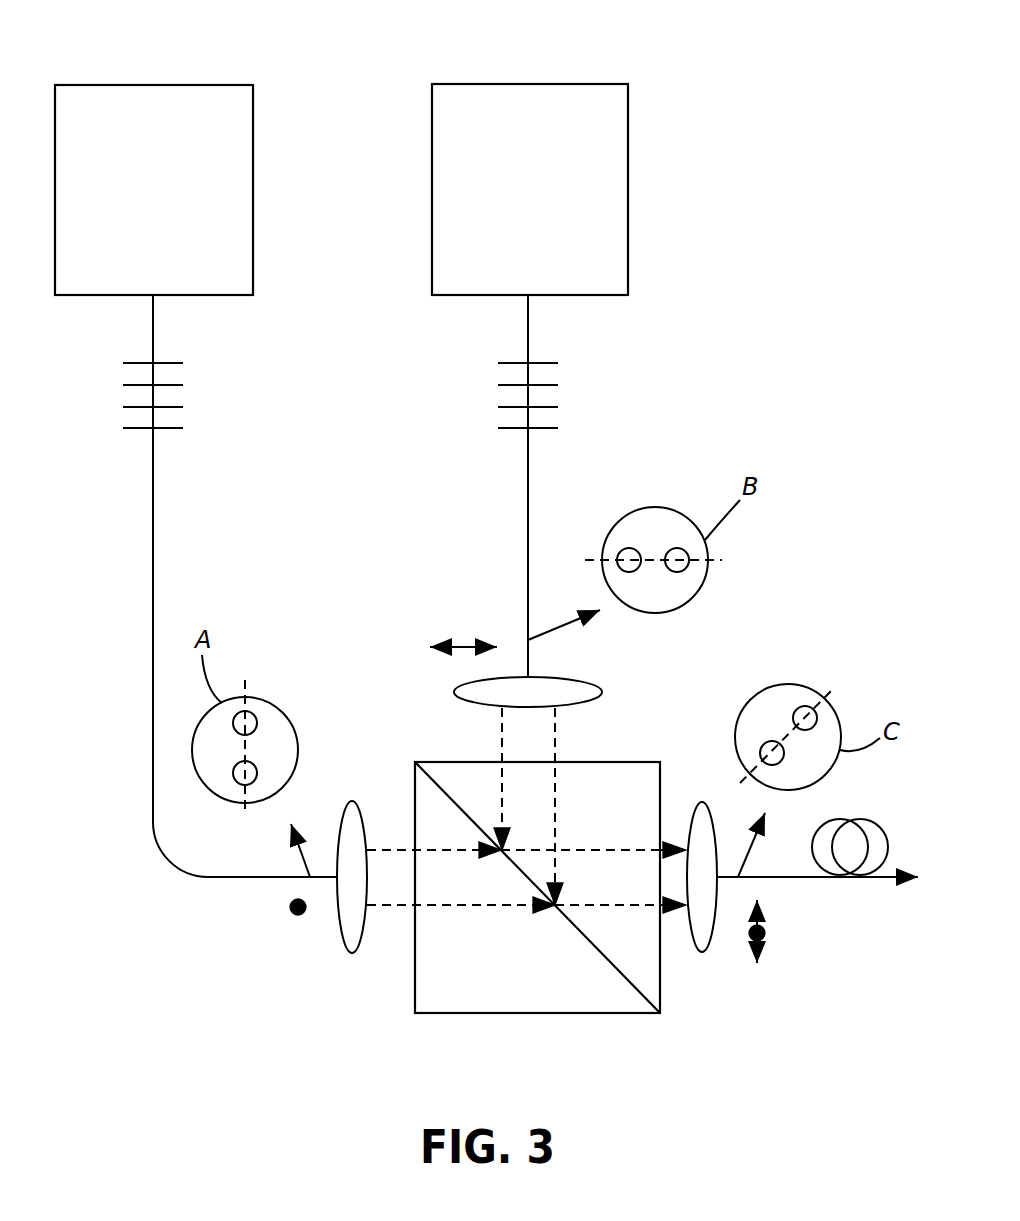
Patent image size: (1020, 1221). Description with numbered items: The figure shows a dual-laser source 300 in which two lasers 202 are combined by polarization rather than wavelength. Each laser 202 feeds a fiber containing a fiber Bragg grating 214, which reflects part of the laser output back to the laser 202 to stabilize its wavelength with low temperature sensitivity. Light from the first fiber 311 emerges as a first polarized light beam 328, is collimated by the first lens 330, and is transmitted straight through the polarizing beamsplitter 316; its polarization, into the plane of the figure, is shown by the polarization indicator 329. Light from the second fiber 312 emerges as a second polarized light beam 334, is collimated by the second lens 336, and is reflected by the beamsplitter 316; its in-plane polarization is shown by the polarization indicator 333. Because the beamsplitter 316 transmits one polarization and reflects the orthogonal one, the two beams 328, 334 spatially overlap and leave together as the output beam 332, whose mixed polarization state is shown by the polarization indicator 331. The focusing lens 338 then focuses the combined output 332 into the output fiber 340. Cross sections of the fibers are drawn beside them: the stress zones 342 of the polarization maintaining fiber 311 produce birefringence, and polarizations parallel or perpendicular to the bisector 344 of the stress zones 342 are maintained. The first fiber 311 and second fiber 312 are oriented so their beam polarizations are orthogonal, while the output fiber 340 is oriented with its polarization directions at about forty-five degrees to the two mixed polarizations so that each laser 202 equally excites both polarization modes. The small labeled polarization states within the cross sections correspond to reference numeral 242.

The laser 202 is at (167, 85).
The fiber Bragg grating 214 is at (133, 385).
The polarization states 242 is at (677, 548).
The dual-laser source 300 is at (752, 366).
The first fiber 311 is at (153, 507).
The second fiber 312 is at (528, 515).
The polarizing beamsplitter 316 is at (568, 1013).
The first polarized light beam 328 is at (403, 907).
The polarization indicator 329 is at (290, 907).
The first lens 330 is at (352, 950).
The polarization indicator 331 is at (765, 933).
The output beam 332 is at (675, 907).
The polarization indicator 333 is at (467, 645).
The second polarized light beam 334 is at (555, 730).
The second lens 336 is at (455, 692).
The focusing lens 338 is at (708, 950).
The output fiber 340 is at (818, 877).
The stress zones 342 is at (257, 773).
The bisector 344 is at (248, 688).